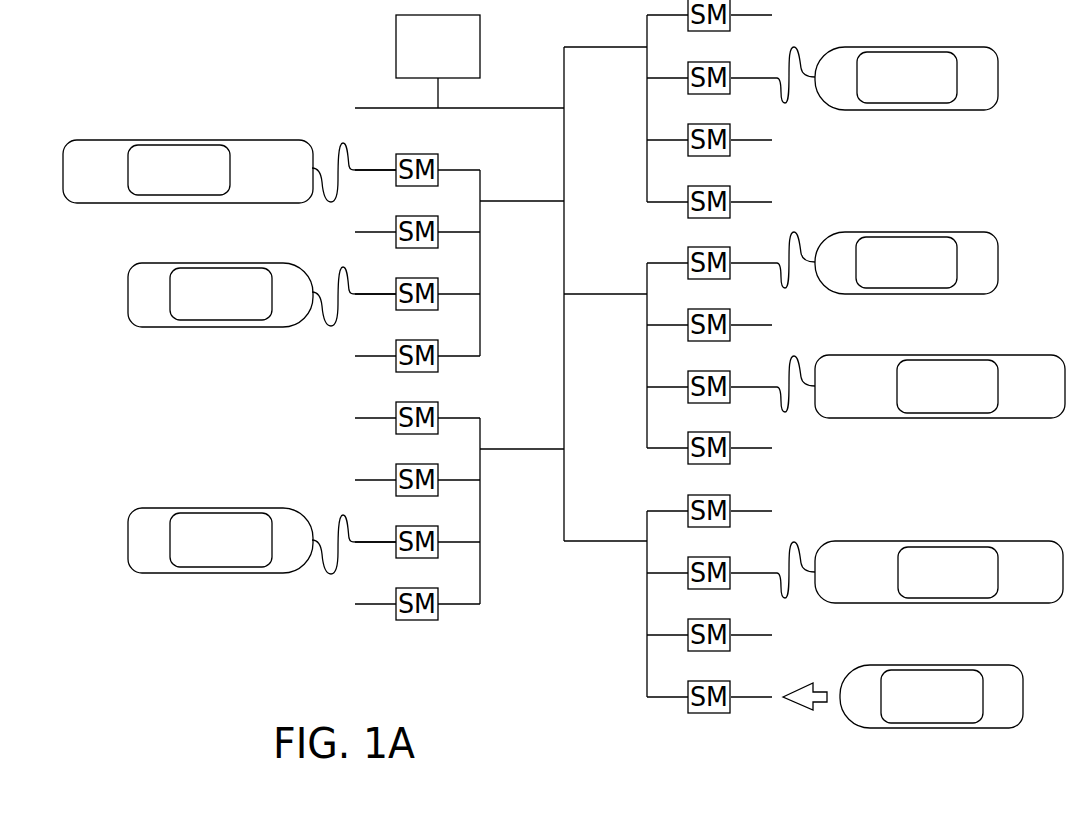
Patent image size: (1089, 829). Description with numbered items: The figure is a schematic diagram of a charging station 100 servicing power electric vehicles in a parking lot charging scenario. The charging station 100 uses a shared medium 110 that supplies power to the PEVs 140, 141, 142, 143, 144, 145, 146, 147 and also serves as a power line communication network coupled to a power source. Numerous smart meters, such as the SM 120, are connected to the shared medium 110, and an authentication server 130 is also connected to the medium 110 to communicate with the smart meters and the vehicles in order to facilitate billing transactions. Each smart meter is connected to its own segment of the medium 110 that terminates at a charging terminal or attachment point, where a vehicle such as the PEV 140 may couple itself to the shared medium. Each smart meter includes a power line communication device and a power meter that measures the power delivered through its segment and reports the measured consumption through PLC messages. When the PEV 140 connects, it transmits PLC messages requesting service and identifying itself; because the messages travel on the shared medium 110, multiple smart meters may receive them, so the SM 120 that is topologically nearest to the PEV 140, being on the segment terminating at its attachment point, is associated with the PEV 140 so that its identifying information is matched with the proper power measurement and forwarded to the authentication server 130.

The charging station 100 is at (192, 60).
The medium 110 is at (585, 46).
The smart meter 120 is at (710, 714).
The authentication server 130 is at (396, 35).
The power electric vehicle 140 is at (923, 728).
The power electric vehicle 141 is at (195, 203).
The power electric vehicle 142 is at (230, 327).
The power electric vehicle 143 is at (233, 573).
The power electric vehicle 144 is at (908, 110).
The power electric vehicle 145 is at (928, 294).
The power electric vehicle 146 is at (943, 418).
The power electric vehicle 147 is at (950, 603).